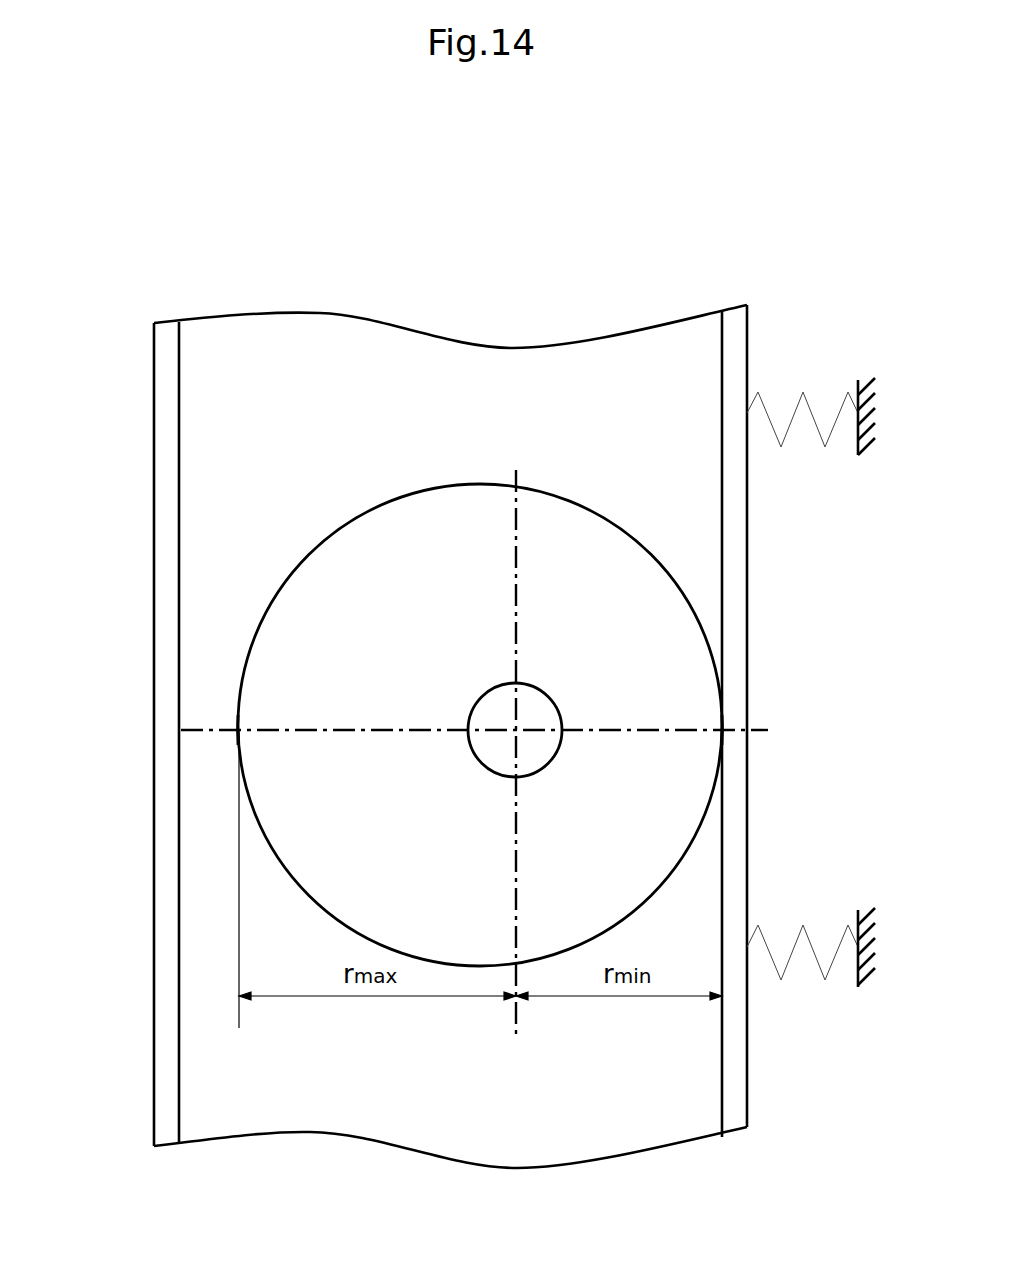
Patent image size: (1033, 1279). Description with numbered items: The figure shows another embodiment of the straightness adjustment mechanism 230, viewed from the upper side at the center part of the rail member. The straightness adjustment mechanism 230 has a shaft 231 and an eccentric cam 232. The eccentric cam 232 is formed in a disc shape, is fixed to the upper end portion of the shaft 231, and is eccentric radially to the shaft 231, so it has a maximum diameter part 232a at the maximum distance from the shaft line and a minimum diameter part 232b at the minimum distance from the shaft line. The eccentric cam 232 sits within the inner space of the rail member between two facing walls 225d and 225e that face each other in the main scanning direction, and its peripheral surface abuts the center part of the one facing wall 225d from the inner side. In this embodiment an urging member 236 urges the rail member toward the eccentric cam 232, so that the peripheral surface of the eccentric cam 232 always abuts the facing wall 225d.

The straightness adjustment mechanism 230 is at (510, 720).
The shaft 231 is at (528, 754).
The eccentric cam 232 is at (625, 605).
The maximum diameter part 232a is at (236, 729).
The minimum diameter part 232b is at (725, 729).
The facing wall 225d is at (731, 618).
The facing wall 225e is at (166, 667).
The urging member 236 is at (813, 418).